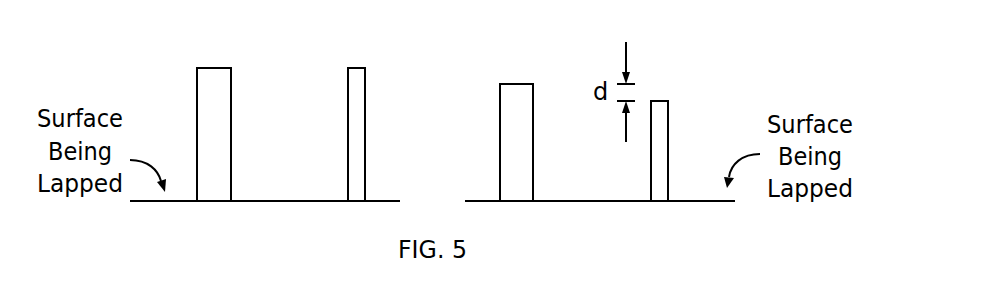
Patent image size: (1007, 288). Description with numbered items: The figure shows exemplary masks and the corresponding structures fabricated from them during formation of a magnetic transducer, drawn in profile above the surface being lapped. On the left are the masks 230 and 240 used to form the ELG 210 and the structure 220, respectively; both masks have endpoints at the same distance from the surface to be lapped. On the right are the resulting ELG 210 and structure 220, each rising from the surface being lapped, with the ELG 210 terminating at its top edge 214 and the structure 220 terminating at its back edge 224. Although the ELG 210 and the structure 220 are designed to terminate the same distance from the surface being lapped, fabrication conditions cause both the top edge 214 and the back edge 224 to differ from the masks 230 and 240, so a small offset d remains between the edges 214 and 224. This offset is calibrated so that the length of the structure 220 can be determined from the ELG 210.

The ELG 210 is at (499, 100).
The top edge 214 is at (518, 63).
The structure 220 is at (669, 167).
The back edge 224 is at (660, 80).
The mask 230 is at (232, 100).
The mask 240 is at (366, 100).